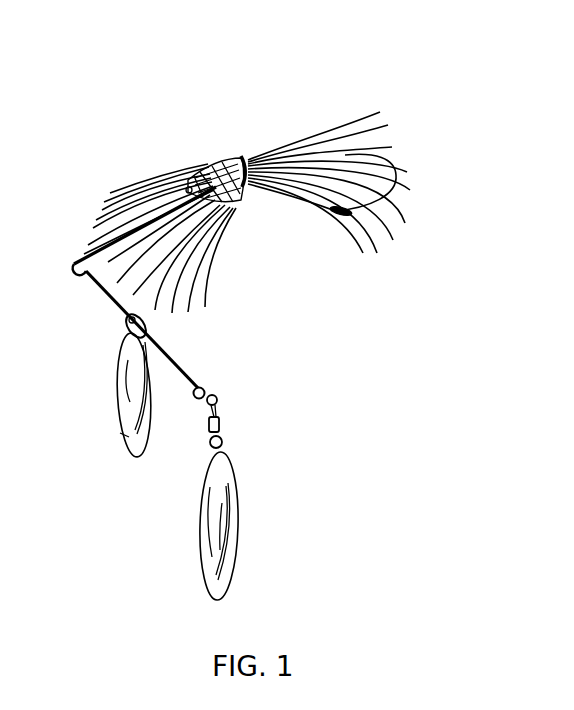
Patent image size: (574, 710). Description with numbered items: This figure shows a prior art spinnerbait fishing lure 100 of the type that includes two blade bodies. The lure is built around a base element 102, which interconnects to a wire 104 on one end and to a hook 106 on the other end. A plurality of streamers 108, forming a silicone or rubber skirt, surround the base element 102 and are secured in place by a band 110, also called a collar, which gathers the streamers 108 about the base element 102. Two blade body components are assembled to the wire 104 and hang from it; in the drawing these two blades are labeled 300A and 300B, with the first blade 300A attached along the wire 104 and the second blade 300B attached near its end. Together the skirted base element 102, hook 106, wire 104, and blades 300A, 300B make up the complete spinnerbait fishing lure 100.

The spinnerbait fishing lure 100 is at (125, 147).
The base element 102 is at (213, 177).
The wire 104 is at (106, 302).
The hook 106 is at (343, 217).
The streamers 108 is at (206, 277).
The band 110 is at (240, 156).
The first spinner blade 300A is at (128, 431).
The second spinner blade 300B is at (226, 527).